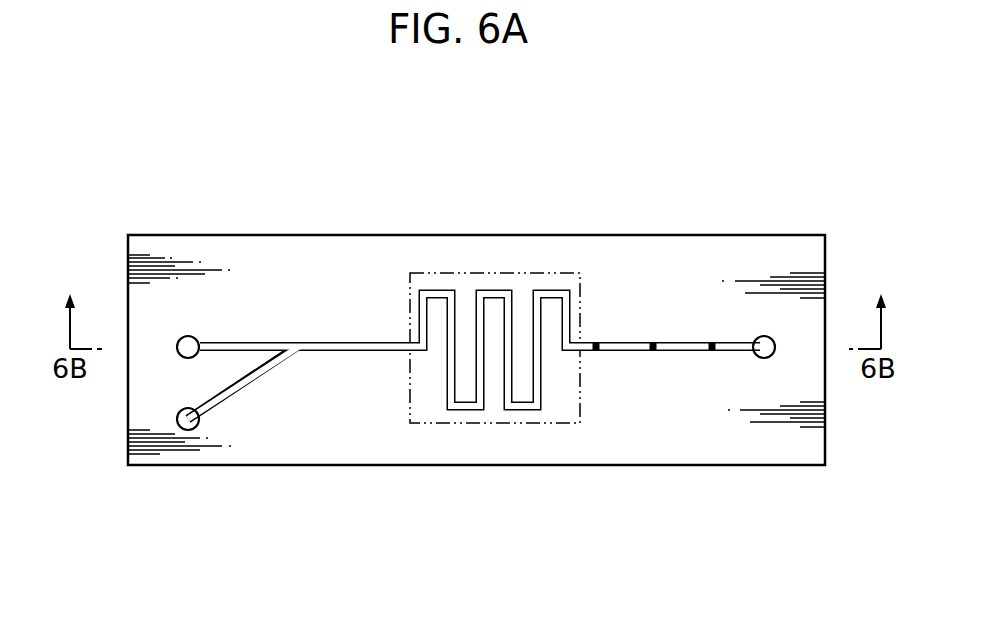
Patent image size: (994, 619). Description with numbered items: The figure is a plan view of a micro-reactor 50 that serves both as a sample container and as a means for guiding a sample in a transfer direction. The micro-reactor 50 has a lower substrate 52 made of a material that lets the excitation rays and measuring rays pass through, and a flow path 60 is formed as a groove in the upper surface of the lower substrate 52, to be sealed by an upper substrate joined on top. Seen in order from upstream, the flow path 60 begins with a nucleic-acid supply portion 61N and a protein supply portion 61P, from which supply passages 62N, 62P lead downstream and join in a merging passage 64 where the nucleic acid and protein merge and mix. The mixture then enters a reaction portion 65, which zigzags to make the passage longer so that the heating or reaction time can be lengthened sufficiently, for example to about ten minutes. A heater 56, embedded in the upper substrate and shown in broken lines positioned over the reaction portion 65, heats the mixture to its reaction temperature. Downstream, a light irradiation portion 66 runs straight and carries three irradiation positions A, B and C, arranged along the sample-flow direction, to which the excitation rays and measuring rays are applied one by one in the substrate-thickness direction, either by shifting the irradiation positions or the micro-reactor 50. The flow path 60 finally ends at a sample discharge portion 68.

The micro-reactor 50 is at (740, 165).
The lower substrate 52 is at (769, 452).
The heater 56 is at (535, 272).
The flow path 60 is at (446, 393).
The protein supply portion 61P is at (185, 357).
The nucleic-acid supply portion 61N is at (192, 420).
The supply passage 62P is at (233, 350).
The supply passage 62N is at (265, 375).
The merging passage 64 is at (369, 347).
The reaction portion 65 is at (467, 407).
The light irradiation portion 66 is at (633, 350).
The sample discharge portion 68 is at (764, 355).
The irradiation position A is at (596, 343).
The irradiation position B is at (653, 343).
The irradiation position C is at (712, 343).